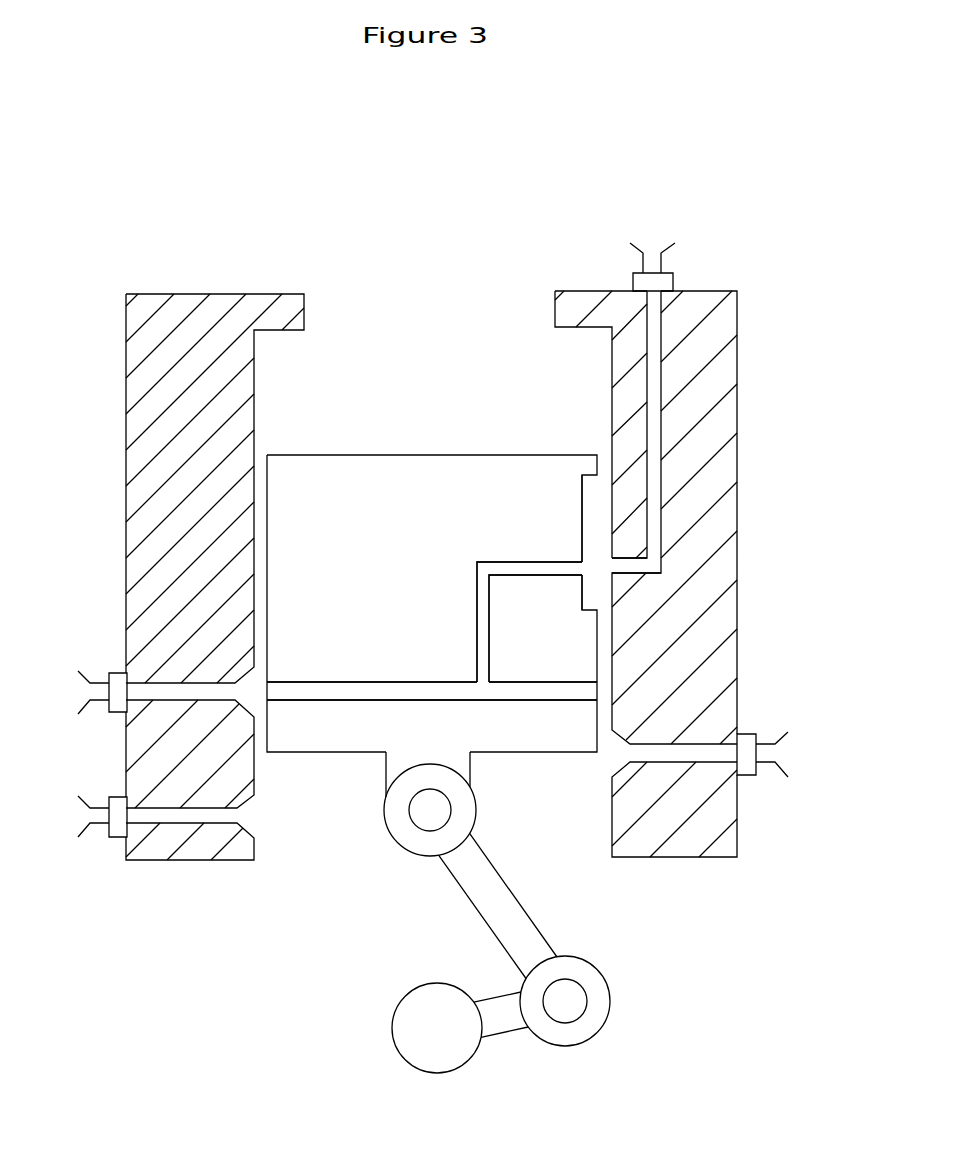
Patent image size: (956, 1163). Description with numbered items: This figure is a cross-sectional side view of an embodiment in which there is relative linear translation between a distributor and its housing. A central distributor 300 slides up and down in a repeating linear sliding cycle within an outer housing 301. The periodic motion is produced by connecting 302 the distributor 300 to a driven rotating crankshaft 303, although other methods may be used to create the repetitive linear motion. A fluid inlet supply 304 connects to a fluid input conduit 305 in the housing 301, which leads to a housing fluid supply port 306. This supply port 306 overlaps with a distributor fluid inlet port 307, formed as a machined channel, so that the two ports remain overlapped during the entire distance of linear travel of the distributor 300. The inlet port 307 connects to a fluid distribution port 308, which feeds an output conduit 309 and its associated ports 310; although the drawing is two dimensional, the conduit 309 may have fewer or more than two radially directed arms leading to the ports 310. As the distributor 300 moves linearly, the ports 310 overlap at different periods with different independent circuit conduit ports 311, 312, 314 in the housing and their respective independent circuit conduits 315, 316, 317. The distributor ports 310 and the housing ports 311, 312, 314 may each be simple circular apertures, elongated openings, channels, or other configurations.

The central distributor 300 is at (332, 467).
The outer housing 301 is at (164, 310).
The connecting 302 is at (498, 918).
The driven rotating crankshaft 303 is at (495, 1022).
The fluid inlet supply 304 is at (667, 281).
The fluid input conduit 305 is at (653, 480).
The housing fluid supply port 306 is at (642, 572).
The distributor fluid inlet port 307 is at (587, 512).
The fluid distribution port 308 is at (478, 628).
The output conduit 309 is at (350, 688).
The ports 310 is at (268, 694).
The independent circuit conduit port 311 is at (248, 688).
The independent circuit conduit port 312 is at (247, 815).
The independent circuit conduit port 314 is at (603, 762).
The independent circuit conduit 315 is at (172, 690).
The independent circuit conduit 316 is at (178, 812).
The independent circuit conduit 317 is at (687, 755).